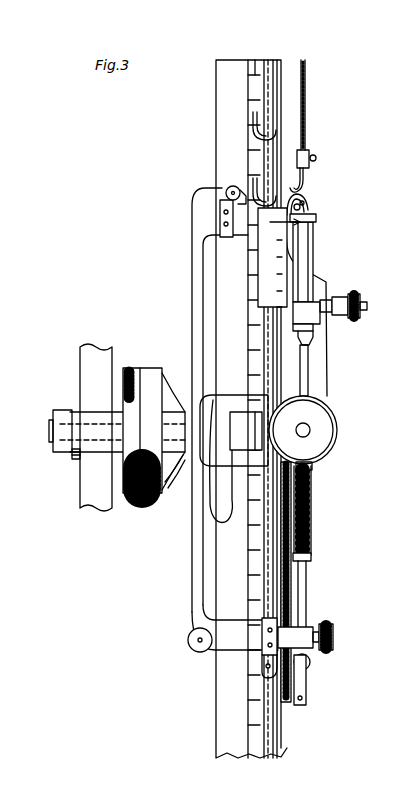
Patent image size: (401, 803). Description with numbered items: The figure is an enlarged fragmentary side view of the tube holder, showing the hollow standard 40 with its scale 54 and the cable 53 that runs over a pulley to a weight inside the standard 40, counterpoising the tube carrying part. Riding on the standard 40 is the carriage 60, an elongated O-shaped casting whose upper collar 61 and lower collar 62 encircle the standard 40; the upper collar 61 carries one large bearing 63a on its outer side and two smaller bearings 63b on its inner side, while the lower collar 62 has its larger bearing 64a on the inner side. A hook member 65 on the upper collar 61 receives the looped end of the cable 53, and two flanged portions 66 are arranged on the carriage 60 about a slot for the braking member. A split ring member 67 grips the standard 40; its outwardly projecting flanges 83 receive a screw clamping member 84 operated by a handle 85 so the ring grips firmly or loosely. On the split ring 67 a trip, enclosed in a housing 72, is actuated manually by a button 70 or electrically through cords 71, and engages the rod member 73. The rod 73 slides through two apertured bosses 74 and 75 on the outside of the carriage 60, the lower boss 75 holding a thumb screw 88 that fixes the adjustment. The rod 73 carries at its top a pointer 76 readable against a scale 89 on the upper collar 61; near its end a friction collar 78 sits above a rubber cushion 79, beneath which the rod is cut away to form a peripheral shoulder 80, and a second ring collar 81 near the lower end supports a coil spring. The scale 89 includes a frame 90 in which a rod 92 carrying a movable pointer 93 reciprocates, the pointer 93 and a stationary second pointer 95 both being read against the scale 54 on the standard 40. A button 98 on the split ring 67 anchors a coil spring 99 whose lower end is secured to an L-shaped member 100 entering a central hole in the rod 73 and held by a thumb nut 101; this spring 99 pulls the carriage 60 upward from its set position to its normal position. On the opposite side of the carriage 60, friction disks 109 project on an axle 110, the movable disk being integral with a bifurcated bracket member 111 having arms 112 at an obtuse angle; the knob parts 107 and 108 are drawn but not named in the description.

The standard 40 is at (282, 746).
The cable 53 is at (307, 94).
The scale 54 is at (255, 75).
The carriage 60 is at (184, 238).
The upper collar 61 is at (221, 201).
The lower collar 62 is at (292, 510).
The large bearing 63a is at (304, 210).
The small bearing 63b is at (219, 191).
The large bearing 64a is at (196, 645).
The hook member 65 is at (312, 184).
The flanged portions 66 is at (328, 362).
The split ring member 67 is at (200, 406).
The button 70 is at (311, 431).
The cords 71 is at (312, 483).
The housing 72 is at (334, 414).
The rod member 73 is at (315, 246).
The apertured boss 74 is at (320, 307).
The apertured boss 75 is at (313, 632).
The pointer 76 is at (316, 218).
The collar 78 is at (313, 328).
The rubber cushion 79 is at (314, 337).
The peripheral shoulder 80 is at (309, 352).
The ring collar 81 is at (311, 558).
The flanges 83 is at (238, 448).
The screw clamping member 84 is at (246, 430).
The handle 85 is at (219, 504).
The thumb screw 88 is at (334, 640).
The scale 89 is at (304, 203).
The frame 90 is at (289, 268).
The rod 92 is at (272, 148).
The pointer 93 is at (270, 134).
The second pointer 95 is at (258, 186).
The button 98 is at (313, 465).
The coil spring 99 is at (292, 586).
The L-shaped member 100 is at (306, 692).
The thumb nut 101 is at (310, 665).
The knurled knob 107 is at (358, 298).
The knob tip 108 is at (368, 307).
The friction disks 109 is at (145, 370).
The axle 110 is at (52, 430).
The bifurcated bracket member 111 is at (76, 452).
The arms 112 is at (85, 374).